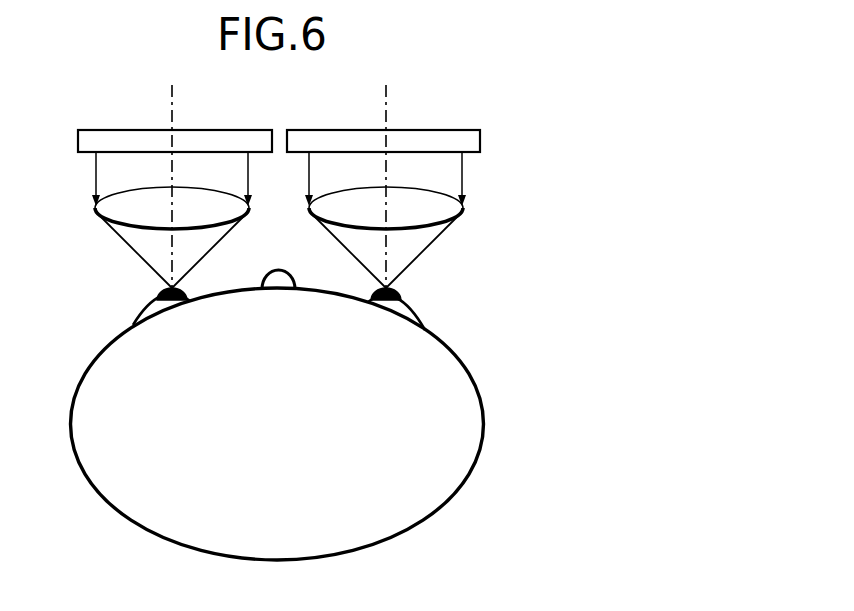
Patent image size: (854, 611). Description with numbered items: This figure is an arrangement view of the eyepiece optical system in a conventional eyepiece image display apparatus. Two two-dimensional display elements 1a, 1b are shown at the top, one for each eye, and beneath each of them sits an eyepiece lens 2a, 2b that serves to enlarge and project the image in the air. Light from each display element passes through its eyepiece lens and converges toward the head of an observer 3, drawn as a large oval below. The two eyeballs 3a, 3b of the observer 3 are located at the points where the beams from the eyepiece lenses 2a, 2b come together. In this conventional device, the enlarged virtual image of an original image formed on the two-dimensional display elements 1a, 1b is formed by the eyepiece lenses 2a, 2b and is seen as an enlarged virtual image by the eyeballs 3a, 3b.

The two-dimensional display element 1a is at (213, 130).
The two-dimensional display element 1b is at (343, 130).
The eyepiece lens 2a is at (107, 222).
The eyepiece lens 2b is at (455, 222).
The observer 3 is at (484, 405).
The eyeball 3a is at (135, 316).
The eyeball 3b is at (422, 314).